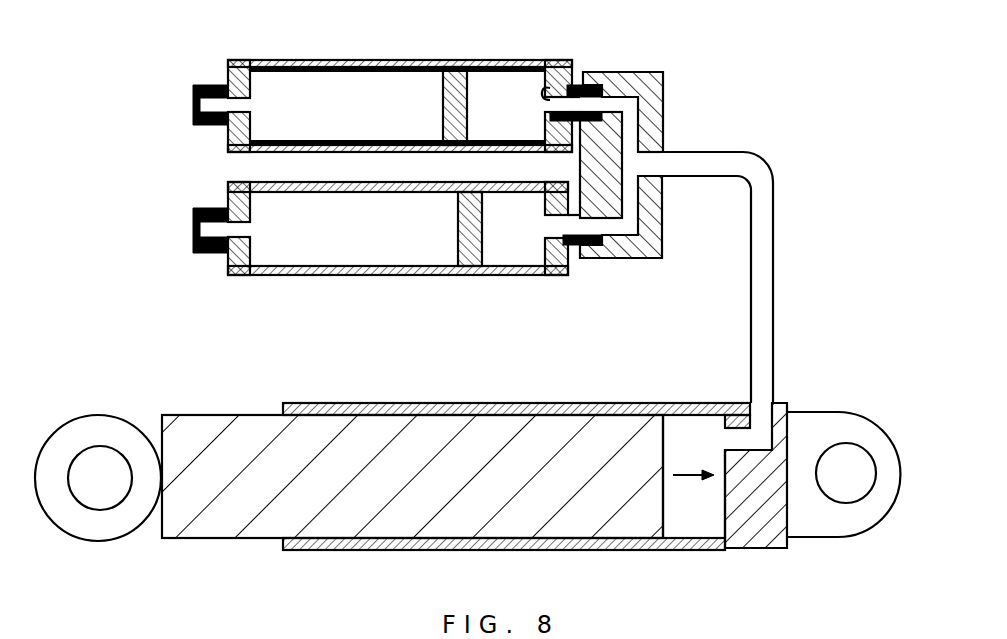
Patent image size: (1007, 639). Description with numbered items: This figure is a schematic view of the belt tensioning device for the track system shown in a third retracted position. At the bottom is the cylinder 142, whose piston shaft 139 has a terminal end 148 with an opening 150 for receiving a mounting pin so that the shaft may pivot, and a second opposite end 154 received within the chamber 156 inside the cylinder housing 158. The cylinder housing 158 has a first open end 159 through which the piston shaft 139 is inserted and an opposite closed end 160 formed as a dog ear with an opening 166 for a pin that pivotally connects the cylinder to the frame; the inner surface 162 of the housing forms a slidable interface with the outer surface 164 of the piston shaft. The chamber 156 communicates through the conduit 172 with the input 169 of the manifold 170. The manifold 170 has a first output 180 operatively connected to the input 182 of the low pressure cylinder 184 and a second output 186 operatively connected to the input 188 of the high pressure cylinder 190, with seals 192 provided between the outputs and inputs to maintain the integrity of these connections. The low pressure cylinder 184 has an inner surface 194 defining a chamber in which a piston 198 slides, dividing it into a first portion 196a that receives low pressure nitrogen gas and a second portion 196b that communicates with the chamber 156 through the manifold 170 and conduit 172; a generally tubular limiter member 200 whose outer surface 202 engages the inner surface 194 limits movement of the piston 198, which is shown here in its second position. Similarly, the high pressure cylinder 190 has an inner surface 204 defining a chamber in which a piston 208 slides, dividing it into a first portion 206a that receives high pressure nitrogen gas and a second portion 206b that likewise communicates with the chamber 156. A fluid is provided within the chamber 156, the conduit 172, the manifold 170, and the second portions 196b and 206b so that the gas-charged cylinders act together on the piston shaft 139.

The piston shaft 139 is at (185, 423).
The cylinder 142 is at (320, 571).
The terminal end 148 is at (72, 432).
The opening 150 is at (93, 503).
The second opposite end 154 is at (640, 437).
The chamber 156 is at (677, 520).
The cylinder housing 158 is at (748, 543).
The first open end 159 is at (283, 413).
The closed end 160 is at (837, 415).
The inner surface 162 is at (693, 420).
The outer surface 164 is at (177, 542).
The opening 166 is at (845, 503).
The input 169 is at (665, 151).
The manifold 170 is at (663, 75).
The conduit 172 is at (768, 176).
The first output 180 is at (653, 73).
The input 182 is at (570, 66).
The low pressure cylinder 184 is at (188, 65).
The second output 186 is at (608, 237).
The input 188 is at (577, 222).
The high pressure cylinder 190 is at (195, 177).
The seals 192 is at (600, 276).
The inner surface 194 is at (546, 58).
The first portion 196a is at (231, 91).
The second portion 196b is at (485, 80).
The piston 198 is at (448, 68).
The limiter member 200 is at (196, 120).
The outer surface 202 is at (290, 64).
The inner surface 204 is at (312, 266).
The first portion 206a is at (273, 250).
The second portion 206b is at (492, 250).
The piston 208 is at (433, 257).